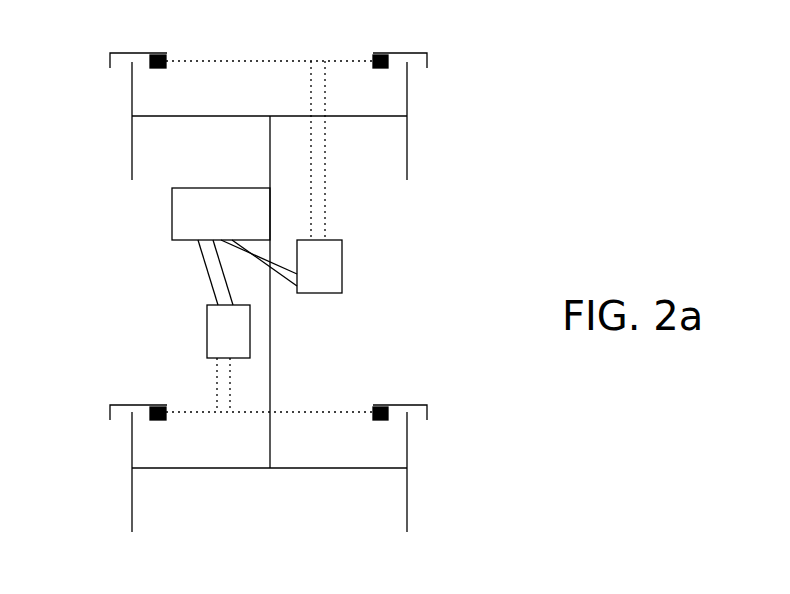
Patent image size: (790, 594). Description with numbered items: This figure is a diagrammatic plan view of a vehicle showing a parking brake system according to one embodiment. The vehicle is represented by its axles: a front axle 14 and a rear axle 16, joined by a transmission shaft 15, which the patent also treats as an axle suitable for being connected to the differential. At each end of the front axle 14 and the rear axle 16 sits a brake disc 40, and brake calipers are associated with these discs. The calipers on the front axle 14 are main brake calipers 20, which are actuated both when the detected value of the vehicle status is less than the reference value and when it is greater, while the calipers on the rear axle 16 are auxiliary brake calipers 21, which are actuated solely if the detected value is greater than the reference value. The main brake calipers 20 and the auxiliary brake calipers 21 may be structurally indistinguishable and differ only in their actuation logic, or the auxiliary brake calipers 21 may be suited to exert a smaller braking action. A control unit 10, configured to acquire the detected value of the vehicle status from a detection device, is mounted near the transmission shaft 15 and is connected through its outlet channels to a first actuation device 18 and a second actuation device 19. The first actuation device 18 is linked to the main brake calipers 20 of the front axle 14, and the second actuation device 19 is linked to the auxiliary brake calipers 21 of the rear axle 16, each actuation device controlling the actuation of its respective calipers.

The control unit 10 is at (234, 246).
The front axle 14 is at (363, 117).
The transmission shaft 15 is at (272, 358).
The rear axle 16 is at (338, 470).
The first actuation device 18 is at (319, 177).
The second actuation device 19 is at (228, 358).
The main brake caliper 20 is at (152, 54).
The auxiliary brake caliper 21 is at (158, 403).
The brake disc 40 is at (128, 157).